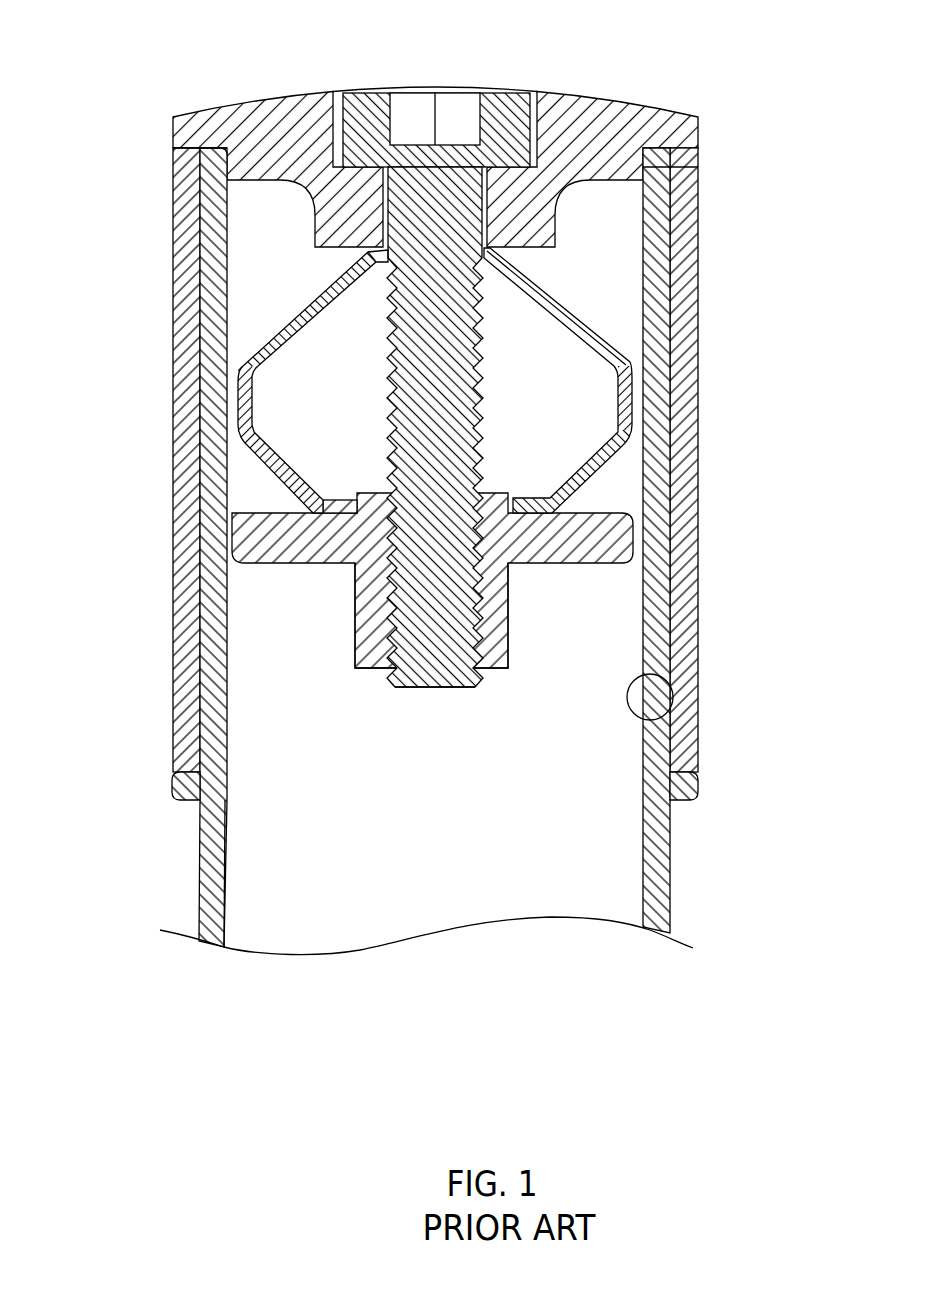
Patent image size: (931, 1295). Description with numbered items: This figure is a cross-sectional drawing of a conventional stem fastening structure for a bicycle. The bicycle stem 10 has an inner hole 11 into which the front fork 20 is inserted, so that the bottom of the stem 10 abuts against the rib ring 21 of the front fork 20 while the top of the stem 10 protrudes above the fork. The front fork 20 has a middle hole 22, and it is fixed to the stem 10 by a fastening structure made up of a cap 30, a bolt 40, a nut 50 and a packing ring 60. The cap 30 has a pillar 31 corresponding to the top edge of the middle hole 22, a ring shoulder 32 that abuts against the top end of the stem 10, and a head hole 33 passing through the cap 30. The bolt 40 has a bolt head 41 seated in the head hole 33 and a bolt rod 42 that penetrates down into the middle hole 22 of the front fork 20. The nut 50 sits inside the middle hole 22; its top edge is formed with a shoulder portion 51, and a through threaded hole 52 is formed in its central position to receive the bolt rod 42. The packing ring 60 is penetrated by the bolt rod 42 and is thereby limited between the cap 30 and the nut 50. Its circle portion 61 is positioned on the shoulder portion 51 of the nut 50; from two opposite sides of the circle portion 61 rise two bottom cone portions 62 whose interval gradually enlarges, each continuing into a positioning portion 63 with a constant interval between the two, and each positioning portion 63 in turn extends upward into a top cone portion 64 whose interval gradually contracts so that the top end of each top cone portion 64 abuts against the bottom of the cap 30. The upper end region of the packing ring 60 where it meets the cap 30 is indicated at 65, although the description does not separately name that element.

The bicycle stem 10 is at (693, 588).
The inner hole 11 is at (693, 718).
The front fork 20 is at (195, 890).
The rib ring 21 is at (172, 783).
The middle hole 22 is at (223, 873).
The cap 30 is at (598, 125).
The pillar 31 is at (698, 167).
The ring shoulder 32 is at (193, 150).
The head hole 33 is at (338, 135).
The bolt 40 is at (482, 335).
The bolt head 41 is at (503, 123).
The bolt rod 42 is at (510, 595).
The nut 50 is at (355, 624).
The shoulder portion 51 is at (378, 495).
The through threaded hole 52 is at (463, 647).
The packing ring 60 is at (412, 275).
The circle portion 61 is at (310, 540).
The bottom cone portion 62 is at (603, 460).
The positioning portion 63 is at (238, 404).
The top cone portion 64 is at (292, 312).
The upper end of elastic member 65 is at (388, 250).